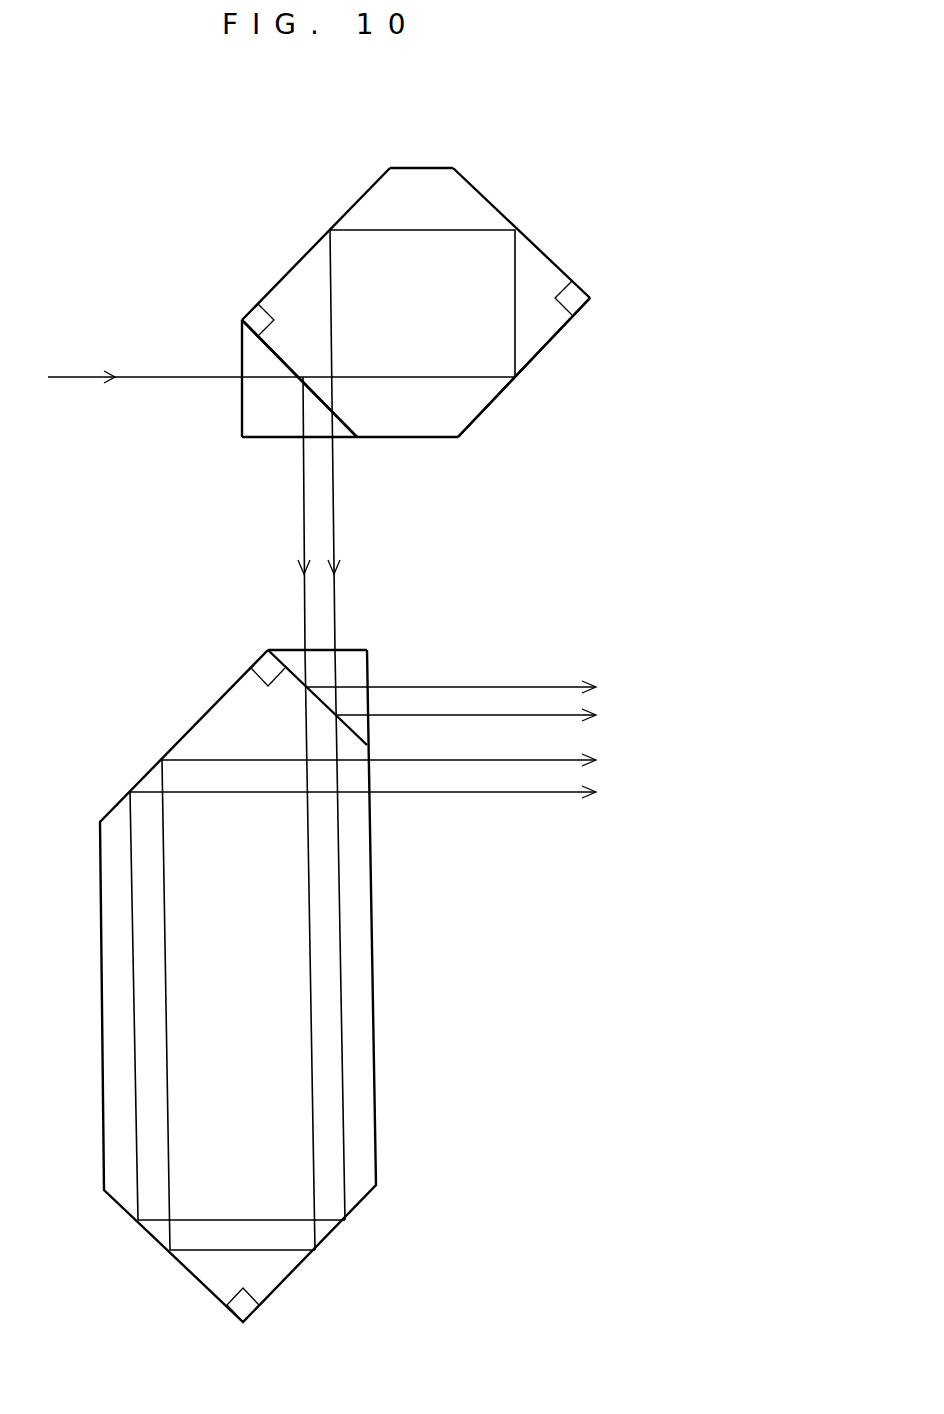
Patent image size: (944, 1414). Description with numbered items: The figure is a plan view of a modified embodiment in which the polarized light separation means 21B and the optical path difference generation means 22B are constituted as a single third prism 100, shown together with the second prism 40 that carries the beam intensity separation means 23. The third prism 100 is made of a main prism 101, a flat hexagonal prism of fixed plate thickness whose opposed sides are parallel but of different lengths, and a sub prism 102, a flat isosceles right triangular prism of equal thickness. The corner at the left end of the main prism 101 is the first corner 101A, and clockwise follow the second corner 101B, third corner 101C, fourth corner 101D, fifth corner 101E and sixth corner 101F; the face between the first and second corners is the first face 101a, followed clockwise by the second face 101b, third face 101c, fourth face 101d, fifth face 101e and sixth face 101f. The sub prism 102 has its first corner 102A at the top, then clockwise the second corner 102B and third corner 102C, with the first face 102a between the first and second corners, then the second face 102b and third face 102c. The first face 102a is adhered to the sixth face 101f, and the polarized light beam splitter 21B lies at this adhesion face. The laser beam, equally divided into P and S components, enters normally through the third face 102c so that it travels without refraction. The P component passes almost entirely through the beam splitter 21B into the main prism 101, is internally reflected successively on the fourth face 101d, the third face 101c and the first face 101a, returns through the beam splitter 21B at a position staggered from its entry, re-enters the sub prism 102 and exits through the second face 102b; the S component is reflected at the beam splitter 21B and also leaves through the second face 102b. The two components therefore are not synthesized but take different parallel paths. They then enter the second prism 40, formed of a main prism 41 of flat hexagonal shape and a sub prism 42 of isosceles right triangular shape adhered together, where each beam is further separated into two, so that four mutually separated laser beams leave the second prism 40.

The third prism 100 is at (609, 206).
The main prism 101 is at (418, 182).
The first face 101a is at (293, 268).
The second face 101b is at (433, 168).
The third face 101c is at (545, 258).
The fourth face 101d is at (548, 345).
The fifth face 101e is at (425, 438).
The sixth face 101f is at (345, 440).
The first corner 101A is at (240, 320).
The second corner 101B is at (390, 168).
The third corner 101C is at (453, 168).
The fourth corner 101D is at (590, 298).
The fifth corner 101E is at (458, 437).
The sixth corner 101F is at (358, 437).
The sub prism 102 is at (260, 440).
The first face 102a is at (290, 368).
The second face 102b is at (277, 440).
The third face 102c is at (240, 392).
The first corner 102A is at (149, 268).
The second corner 102B is at (504, 547).
The third corner 102C is at (240, 440).
The polarized light beam splitter 21B is at (273, 353).
The optical path difference generation means 22B is at (467, 395).
The beam intensity separation means 23 is at (296, 668).
The second prism 40 is at (165, 712).
The main prism 41 is at (357, 668).
The sub prism 42 is at (115, 992).